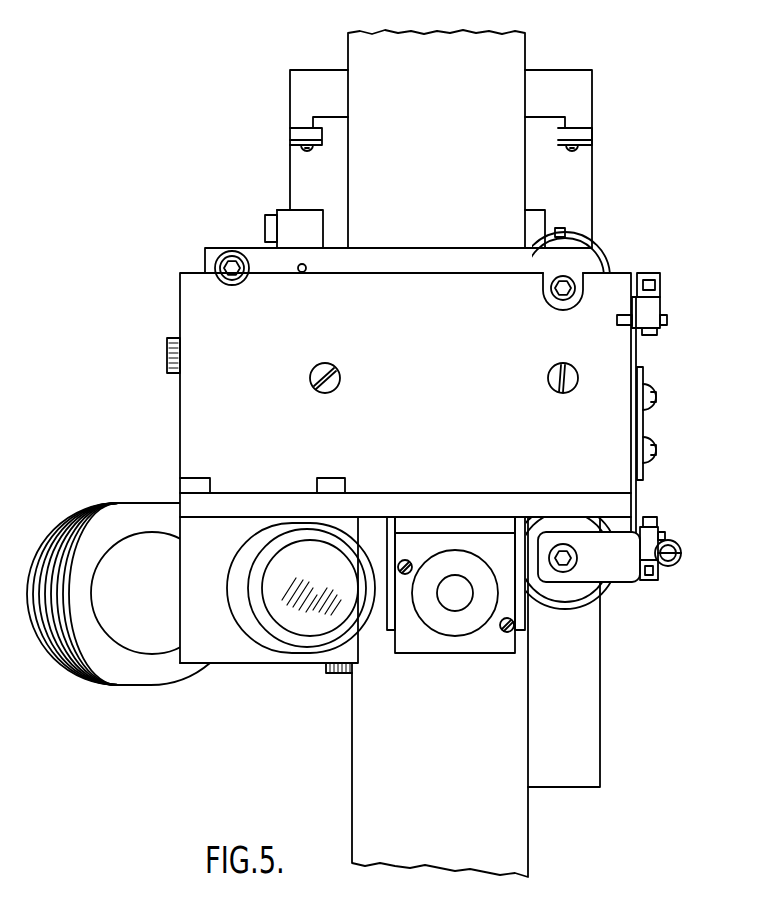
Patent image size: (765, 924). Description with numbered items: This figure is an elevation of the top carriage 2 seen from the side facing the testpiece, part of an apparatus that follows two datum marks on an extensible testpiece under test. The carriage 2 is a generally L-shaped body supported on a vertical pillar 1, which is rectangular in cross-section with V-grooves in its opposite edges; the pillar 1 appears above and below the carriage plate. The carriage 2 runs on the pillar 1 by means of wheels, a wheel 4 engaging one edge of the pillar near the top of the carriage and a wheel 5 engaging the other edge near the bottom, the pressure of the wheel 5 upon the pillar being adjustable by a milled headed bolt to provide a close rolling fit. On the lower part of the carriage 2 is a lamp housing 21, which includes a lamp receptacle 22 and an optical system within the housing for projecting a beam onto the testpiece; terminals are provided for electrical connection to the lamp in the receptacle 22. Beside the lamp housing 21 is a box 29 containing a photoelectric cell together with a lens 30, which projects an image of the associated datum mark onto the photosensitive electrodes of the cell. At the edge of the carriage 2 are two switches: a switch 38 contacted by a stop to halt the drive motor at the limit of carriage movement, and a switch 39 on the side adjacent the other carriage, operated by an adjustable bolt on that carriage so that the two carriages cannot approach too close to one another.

The vertical pillar 1 is at (488, 78).
The carriage 2 is at (237, 332).
The wheel 4 is at (600, 250).
The wheel 5 is at (607, 590).
The lamp housing 21 is at (158, 630).
The lamp receptacle 22 is at (88, 510).
The box 29 is at (492, 657).
The lens 30 is at (448, 603).
The switch 38 is at (647, 300).
The switch 39 is at (648, 542).